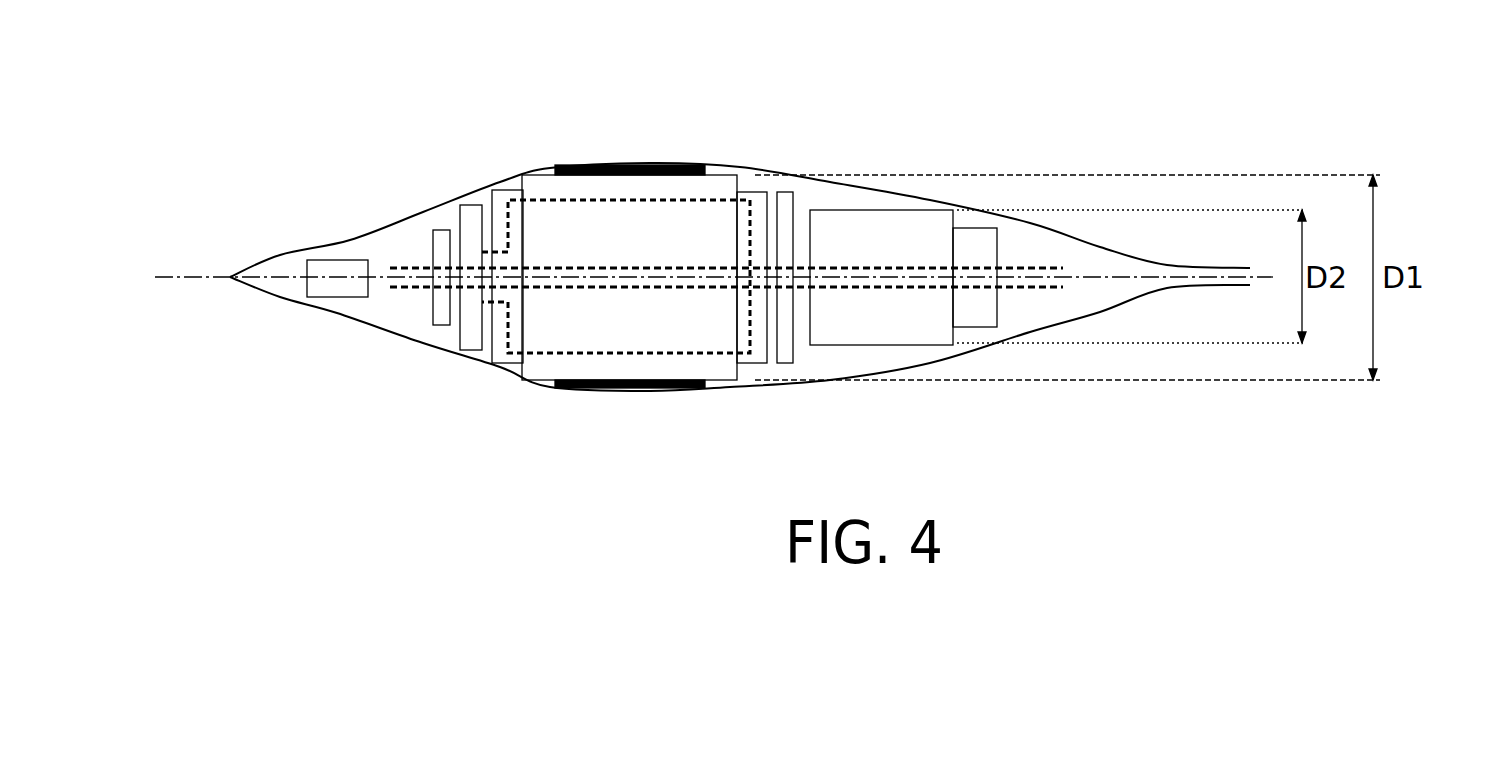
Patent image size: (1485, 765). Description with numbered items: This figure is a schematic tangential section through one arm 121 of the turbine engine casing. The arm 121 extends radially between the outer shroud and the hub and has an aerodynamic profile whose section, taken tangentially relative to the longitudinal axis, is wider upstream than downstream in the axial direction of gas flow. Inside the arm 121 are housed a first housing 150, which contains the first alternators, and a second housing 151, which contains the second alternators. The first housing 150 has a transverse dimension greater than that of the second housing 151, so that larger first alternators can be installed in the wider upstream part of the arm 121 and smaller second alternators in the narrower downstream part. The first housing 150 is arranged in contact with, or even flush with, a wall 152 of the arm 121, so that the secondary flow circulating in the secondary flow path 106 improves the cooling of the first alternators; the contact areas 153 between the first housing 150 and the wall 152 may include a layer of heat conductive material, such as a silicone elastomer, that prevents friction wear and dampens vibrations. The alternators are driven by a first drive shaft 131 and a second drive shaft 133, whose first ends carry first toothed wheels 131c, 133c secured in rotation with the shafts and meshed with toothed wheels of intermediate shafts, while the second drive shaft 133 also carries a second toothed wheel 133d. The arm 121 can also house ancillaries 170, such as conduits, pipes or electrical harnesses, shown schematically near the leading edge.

The secondary stream flow channel 106 is at (737, 267).
The arm 121 is at (714, 150).
The first drive shaft 131 is at (600, 355).
The first toothed wheel 131c is at (475, 351).
The second drive shaft 133 is at (1033, 290).
The first toothed wheel 133c is at (441, 230).
The second toothed wheel 133d is at (797, 200).
The first housing 150 is at (598, 188).
The second housing 151 is at (918, 230).
The wall 152 is at (768, 166).
The contact areas 153 is at (653, 164).
The ancillaries 170 is at (333, 298).